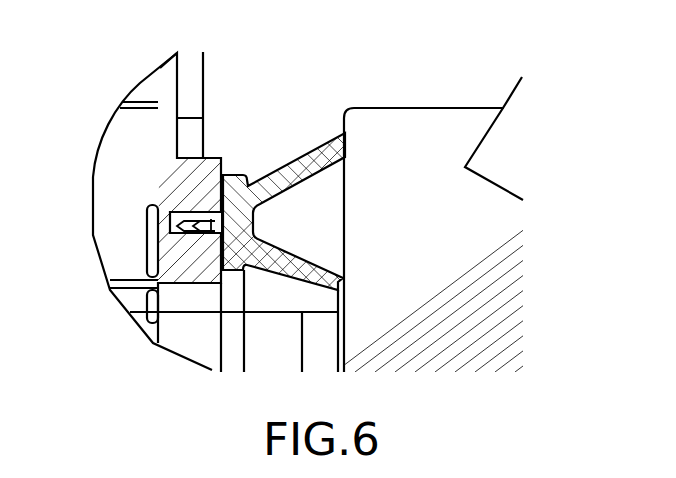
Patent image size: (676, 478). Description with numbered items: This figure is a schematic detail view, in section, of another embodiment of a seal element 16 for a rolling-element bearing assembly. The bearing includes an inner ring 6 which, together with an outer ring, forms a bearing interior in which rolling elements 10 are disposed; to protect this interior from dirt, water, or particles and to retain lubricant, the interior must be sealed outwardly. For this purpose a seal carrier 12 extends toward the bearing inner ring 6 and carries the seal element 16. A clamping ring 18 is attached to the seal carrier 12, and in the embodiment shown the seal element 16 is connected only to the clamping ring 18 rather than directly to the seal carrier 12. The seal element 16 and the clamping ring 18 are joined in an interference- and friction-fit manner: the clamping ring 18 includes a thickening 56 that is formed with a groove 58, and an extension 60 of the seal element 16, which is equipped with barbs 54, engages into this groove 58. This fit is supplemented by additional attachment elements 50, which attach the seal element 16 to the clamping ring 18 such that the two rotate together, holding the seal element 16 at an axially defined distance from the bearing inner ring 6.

The inner ring 6 is at (487, 313).
The rolling elements 10 is at (502, 155).
The seal carrier 12 is at (190, 80).
The seal element 16 is at (292, 168).
The clamping ring 18 is at (170, 93).
The attachment elements 50 is at (155, 229).
The barbs 54 is at (190, 212).
The thickening 56 is at (183, 178).
The groove 58 is at (173, 229).
The extension 60 is at (222, 233).